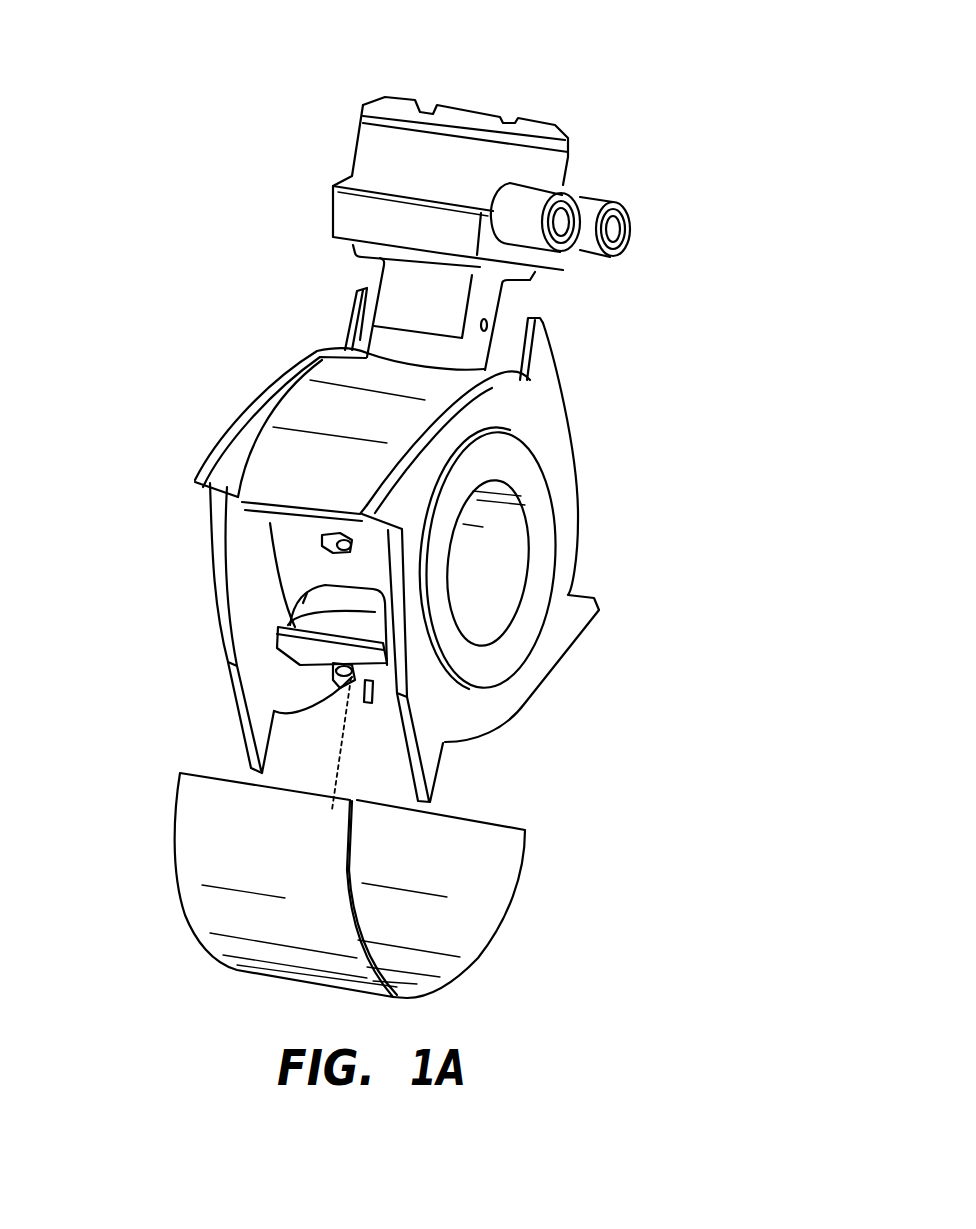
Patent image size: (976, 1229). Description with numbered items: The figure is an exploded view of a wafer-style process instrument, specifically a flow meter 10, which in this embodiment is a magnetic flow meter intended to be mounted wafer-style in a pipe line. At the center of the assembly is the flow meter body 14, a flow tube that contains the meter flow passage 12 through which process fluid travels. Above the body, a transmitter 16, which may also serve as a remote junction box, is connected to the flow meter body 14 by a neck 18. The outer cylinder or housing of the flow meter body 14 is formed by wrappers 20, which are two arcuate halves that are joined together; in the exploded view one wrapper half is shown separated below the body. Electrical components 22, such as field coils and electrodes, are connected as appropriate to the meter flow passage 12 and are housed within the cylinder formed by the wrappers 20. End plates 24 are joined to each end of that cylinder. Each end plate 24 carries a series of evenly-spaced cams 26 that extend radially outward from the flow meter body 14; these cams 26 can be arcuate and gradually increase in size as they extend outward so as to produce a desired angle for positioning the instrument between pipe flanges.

The wafer-style flow meter 10 is at (201, 189).
The meter flow passage 12 is at (477, 560).
The flow meter body 14 is at (602, 499).
The transmitter 16 is at (480, 107).
The neck 18 is at (487, 297).
The wrappers 20 is at (268, 525).
The electrical components 22 is at (315, 558).
The end plates 24 is at (522, 421).
The cams 26 is at (356, 312).